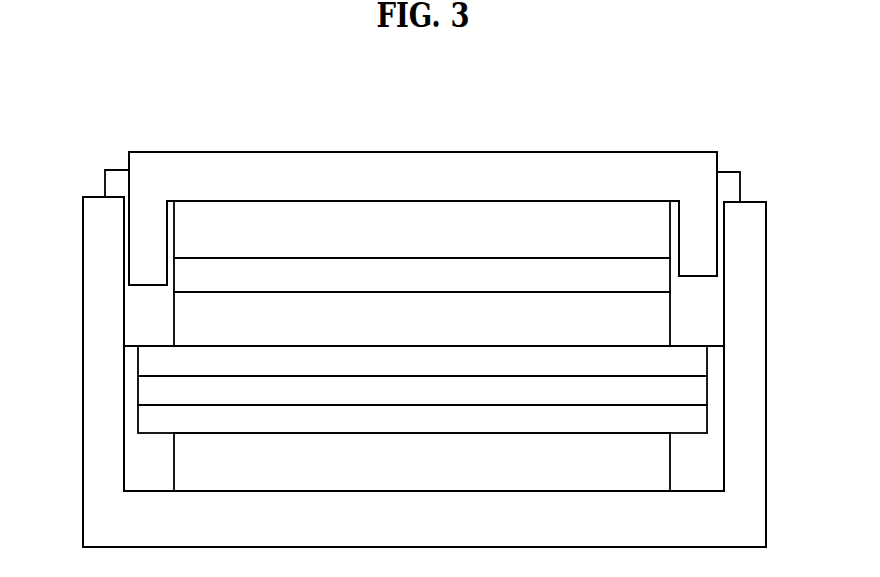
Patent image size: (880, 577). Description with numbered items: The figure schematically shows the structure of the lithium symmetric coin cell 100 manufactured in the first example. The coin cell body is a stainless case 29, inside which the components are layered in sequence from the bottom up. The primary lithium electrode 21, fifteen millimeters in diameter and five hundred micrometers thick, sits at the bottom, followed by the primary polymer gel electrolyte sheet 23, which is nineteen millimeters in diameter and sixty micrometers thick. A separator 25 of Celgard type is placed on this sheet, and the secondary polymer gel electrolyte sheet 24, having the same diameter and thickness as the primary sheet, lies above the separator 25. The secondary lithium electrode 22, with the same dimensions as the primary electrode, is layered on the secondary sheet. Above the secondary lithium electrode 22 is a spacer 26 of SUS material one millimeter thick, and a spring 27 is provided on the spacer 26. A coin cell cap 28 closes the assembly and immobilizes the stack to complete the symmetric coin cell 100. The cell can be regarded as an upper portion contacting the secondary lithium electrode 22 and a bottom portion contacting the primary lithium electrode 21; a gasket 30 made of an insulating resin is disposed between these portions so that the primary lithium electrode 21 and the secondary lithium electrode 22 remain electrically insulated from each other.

The symmetric coin cell 100 is at (108, 142).
The primary lithium electrode 21 is at (422, 462).
The secondary lithium electrode 22 is at (422, 319).
The primary polymer gel electrolyte sheet 23 is at (422, 419).
The secondary polymer gel electrolyte sheet 24 is at (422, 361).
The separator 25 is at (422, 390).
The spacer 26 is at (422, 275).
The spring 27 is at (422, 229).
The coin cell cap 28 is at (423, 218).
The stainless case 29 is at (424, 372).
The gasket 30 is at (424, 327).